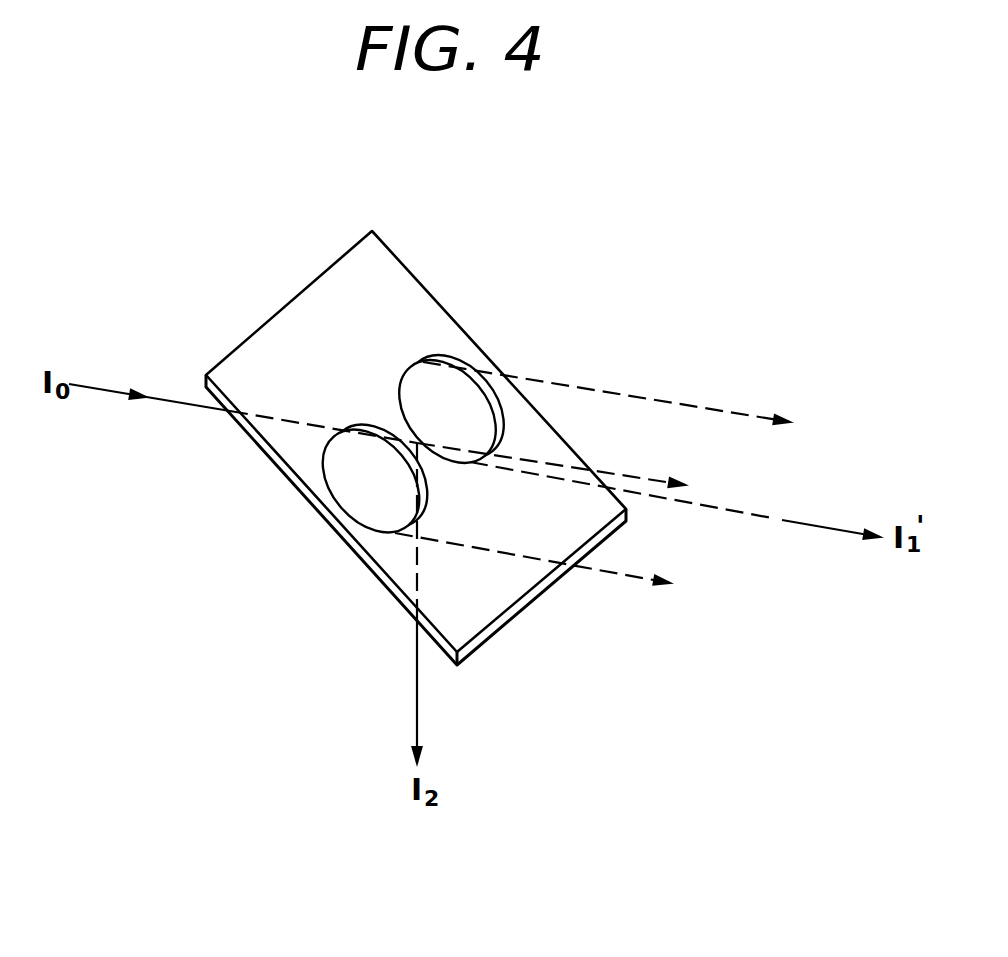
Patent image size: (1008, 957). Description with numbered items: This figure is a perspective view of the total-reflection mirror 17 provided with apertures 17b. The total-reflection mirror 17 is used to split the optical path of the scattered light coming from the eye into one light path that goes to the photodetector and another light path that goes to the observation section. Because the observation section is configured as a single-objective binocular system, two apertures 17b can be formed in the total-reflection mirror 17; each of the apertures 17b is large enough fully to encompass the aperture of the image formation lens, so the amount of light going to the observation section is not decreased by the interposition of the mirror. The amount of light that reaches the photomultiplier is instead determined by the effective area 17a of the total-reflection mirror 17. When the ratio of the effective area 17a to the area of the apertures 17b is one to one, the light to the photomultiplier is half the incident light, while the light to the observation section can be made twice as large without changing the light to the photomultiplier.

The total-reflection mirror 17 is at (402, 265).
The effective area 17a is at (490, 610).
The apertures 17b is at (413, 383).